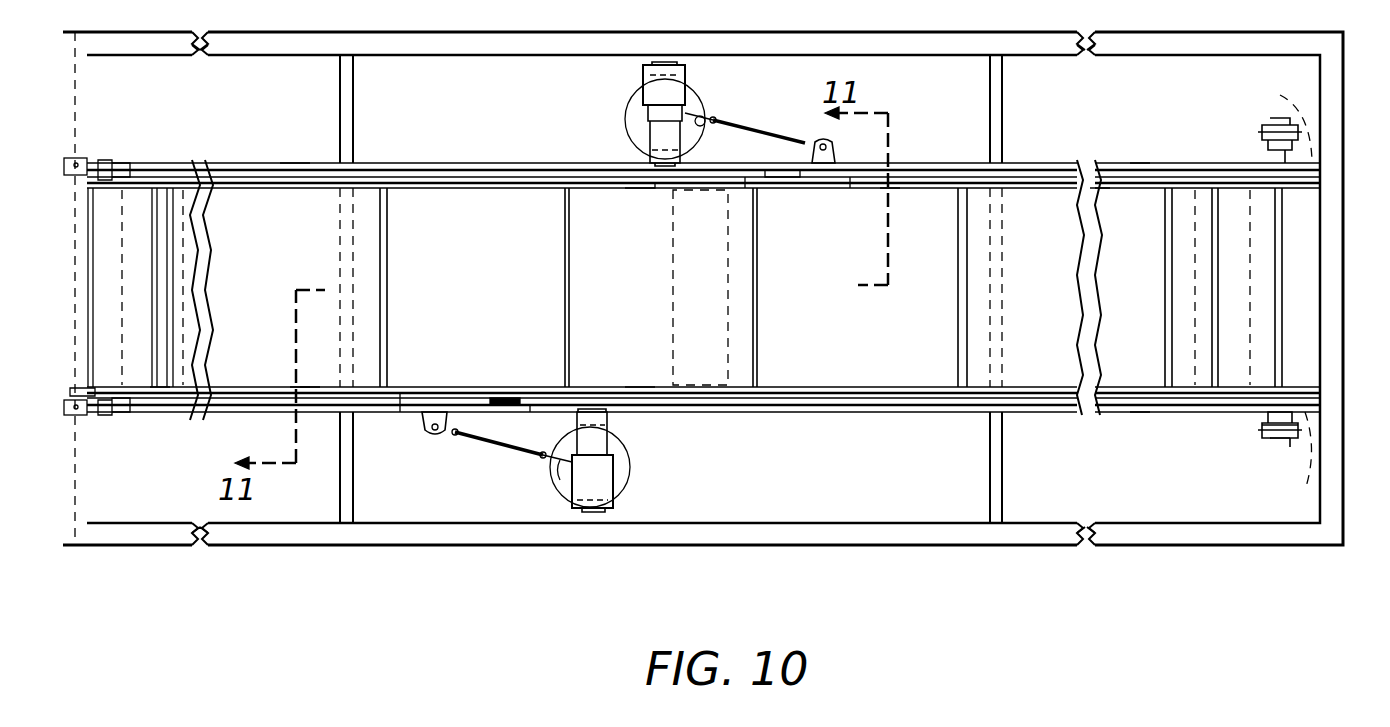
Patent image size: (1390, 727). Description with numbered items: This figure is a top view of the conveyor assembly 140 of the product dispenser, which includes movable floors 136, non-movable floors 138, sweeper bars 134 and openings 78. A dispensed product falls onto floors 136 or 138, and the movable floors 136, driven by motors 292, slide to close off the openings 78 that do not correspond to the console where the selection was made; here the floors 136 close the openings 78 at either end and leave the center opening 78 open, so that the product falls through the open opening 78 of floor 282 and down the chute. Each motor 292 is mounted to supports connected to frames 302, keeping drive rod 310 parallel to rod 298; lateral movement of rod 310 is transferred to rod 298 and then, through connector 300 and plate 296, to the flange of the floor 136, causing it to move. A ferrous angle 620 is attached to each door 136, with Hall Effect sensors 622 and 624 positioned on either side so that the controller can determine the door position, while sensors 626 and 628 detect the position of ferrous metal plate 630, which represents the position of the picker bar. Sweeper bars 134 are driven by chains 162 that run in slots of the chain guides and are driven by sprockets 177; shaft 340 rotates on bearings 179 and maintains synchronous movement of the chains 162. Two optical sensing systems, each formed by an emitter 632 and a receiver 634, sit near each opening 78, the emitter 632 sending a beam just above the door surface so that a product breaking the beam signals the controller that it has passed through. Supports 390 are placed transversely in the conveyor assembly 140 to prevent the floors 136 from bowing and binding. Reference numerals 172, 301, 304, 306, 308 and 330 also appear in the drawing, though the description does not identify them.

The opening 78 is at (145, 320).
The sweeper bar 134 is at (765, 333).
The movable floor 136 is at (928, 190).
The non-movable floor 138 is at (105, 225).
The conveyor assembly 140 is at (943, 550).
The chain 162 is at (930, 398).
The roller shaft 172 is at (1268, 432).
The sprocket 177 is at (1268, 150).
The bearing 179 is at (100, 185).
The floor 282 is at (1305, 275).
The motor 292 is at (658, 85).
The plate 296 is at (830, 140).
The rod 298 is at (740, 117).
The connector 300 is at (810, 143).
The rod end 301 is at (702, 110).
The frame 302 is at (975, 163).
The guide arc 304 is at (1273, 290).
The end bracket 306 is at (70, 160).
The roller wheel 308 is at (1263, 442).
The drive rod 310 is at (560, 465).
The inner frame 330 is at (1130, 545).
The shaft 340 is at (85, 340).
The support 390 is at (357, 106).
The ferrous angle 620 is at (495, 398).
The sensor 622 is at (400, 393).
The sensor 624 is at (535, 405).
The sensor 626 is at (860, 190).
The sensor 628 is at (748, 190).
The ferrous metal plate 630 is at (790, 188).
The emitter 632 is at (290, 387).
The receiver 634 is at (292, 163).